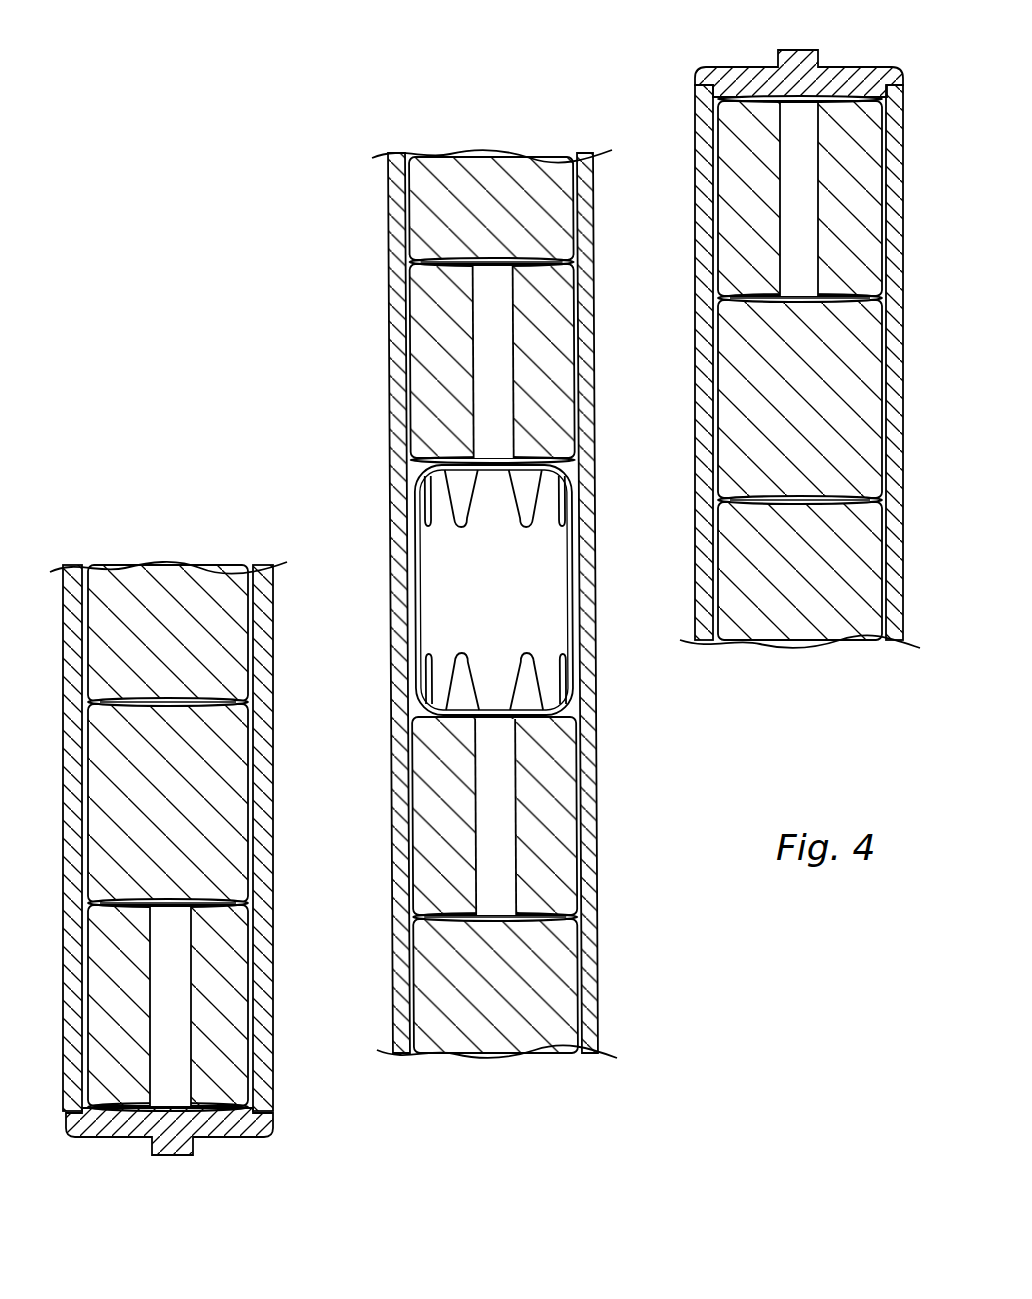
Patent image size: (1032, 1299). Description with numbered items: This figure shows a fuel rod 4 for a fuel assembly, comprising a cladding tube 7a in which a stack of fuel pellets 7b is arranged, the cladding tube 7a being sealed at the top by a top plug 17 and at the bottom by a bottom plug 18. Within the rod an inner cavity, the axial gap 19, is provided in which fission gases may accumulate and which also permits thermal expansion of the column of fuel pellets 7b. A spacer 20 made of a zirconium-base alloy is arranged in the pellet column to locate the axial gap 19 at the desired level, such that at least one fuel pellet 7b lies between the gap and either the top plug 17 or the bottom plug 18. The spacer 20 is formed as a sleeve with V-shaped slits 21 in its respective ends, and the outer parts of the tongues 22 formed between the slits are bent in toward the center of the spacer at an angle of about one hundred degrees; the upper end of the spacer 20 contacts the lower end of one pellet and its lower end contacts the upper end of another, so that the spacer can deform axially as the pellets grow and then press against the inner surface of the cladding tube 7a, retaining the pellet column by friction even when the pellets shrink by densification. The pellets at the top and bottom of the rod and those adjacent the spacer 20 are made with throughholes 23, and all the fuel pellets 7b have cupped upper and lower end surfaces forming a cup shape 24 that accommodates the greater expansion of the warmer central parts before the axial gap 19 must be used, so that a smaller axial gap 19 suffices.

The fuel rod 4 is at (479, 604).
The cladding tube 7a is at (262, 755).
The fuel pellets 7b is at (222, 626).
The top plug 17 is at (852, 71).
The bottom plug 18 is at (222, 1132).
The axial gap 19 is at (455, 490).
The spacer 20 is at (493, 585).
The V-shaped slits 21 is at (528, 678).
The tongues 22 is at (548, 687).
The throughholes 23 is at (175, 988).
The cup shape 24 is at (292, 686).